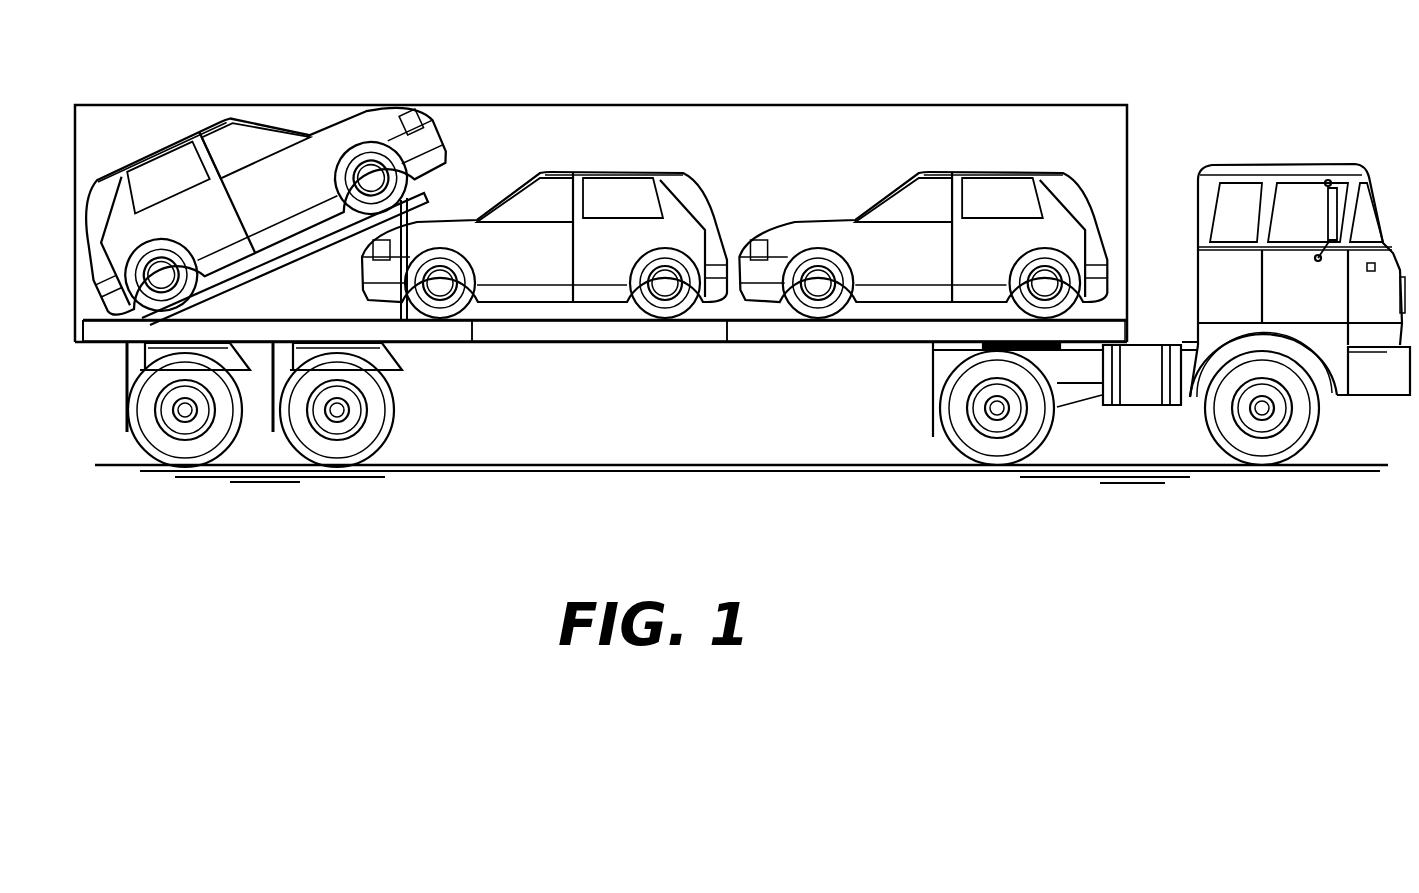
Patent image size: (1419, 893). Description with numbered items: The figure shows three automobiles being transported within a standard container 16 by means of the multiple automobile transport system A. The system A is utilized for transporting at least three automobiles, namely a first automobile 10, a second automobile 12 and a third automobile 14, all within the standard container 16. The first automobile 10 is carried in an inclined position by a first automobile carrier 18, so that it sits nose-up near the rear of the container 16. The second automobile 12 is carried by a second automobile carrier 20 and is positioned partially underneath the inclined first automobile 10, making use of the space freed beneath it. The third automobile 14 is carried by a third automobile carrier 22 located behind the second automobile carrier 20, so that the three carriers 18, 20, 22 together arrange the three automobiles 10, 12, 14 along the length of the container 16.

The multiple automobile transport system A is at (351, 100).
The first automobile 10 is at (220, 115).
The second automobile 12 is at (614, 170).
The third automobile 14 is at (1000, 168).
The standard container 16 is at (810, 103).
The first automobile carrier 18 is at (436, 333).
The second automobile carrier 20 is at (631, 333).
The third automobile carrier 22 is at (822, 333).